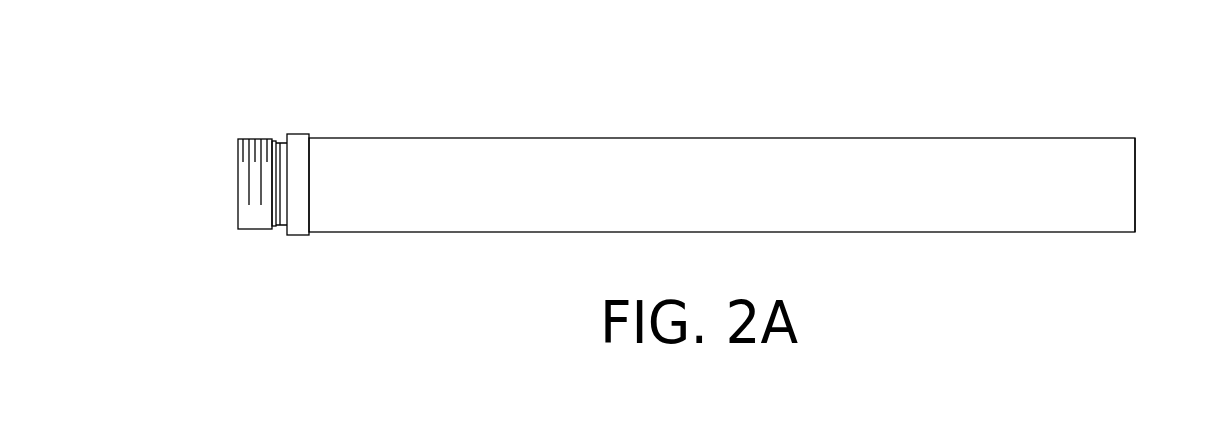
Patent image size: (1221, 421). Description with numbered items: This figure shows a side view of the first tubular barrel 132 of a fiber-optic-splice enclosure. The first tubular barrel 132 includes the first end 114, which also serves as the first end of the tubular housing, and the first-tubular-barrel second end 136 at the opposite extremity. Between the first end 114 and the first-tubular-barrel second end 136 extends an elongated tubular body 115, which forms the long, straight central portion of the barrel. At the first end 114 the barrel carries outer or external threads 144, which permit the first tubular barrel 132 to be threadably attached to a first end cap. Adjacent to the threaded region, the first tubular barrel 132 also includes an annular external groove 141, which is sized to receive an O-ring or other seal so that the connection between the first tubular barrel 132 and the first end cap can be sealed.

The first tubular barrel 132 is at (735, 88).
The elongated tubular body 115 is at (605, 220).
The first-tubular-barrel second end 136 is at (1135, 184).
The annular external groove 141 is at (277, 228).
The external threads 144 is at (257, 139).
The first end 114 is at (254, 162).